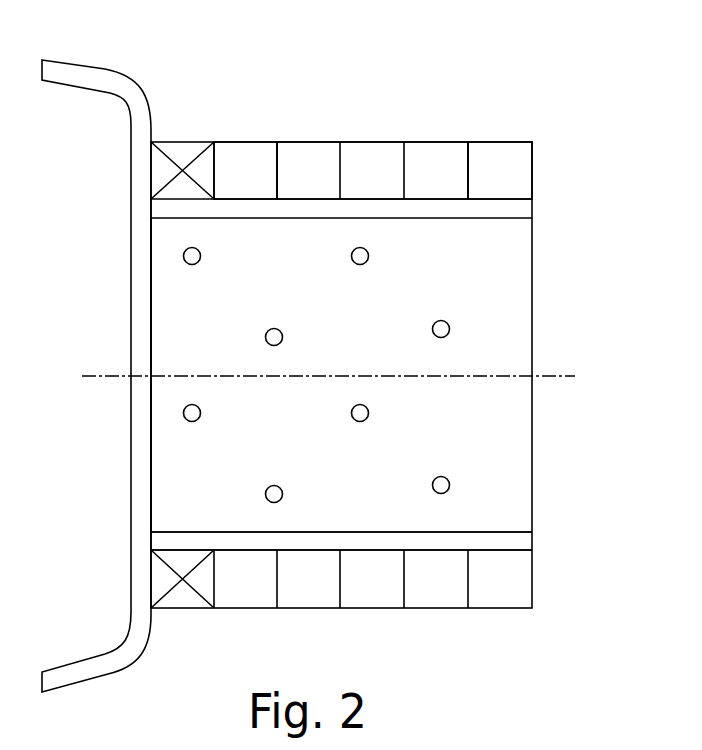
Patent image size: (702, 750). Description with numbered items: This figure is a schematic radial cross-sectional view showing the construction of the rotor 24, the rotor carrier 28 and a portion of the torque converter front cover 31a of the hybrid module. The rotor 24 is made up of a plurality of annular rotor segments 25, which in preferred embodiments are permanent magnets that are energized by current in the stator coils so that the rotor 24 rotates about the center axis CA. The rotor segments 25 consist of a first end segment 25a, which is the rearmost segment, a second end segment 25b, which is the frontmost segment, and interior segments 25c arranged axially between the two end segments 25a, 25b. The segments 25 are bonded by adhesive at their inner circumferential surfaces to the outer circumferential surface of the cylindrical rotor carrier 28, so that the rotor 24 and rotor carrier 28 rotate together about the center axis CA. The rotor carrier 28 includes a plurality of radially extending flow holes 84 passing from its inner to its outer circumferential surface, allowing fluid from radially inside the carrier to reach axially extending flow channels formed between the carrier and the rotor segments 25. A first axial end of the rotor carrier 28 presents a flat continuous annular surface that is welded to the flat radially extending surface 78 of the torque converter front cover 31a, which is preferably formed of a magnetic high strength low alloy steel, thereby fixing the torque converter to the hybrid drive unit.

The rotor 24 is at (560, 126).
The rotor segments 25 is at (530, 617).
The first end segment 25a is at (255, 155).
The second end segment 25b is at (503, 155).
The interior segments 25c is at (432, 155).
The rotor carrier 28 is at (548, 542).
The torque converter front cover 31a is at (120, 70).
The flat radially extending surface 78 is at (152, 253).
The flow holes 84 is at (450, 483).
The center axis CA is at (565, 376).